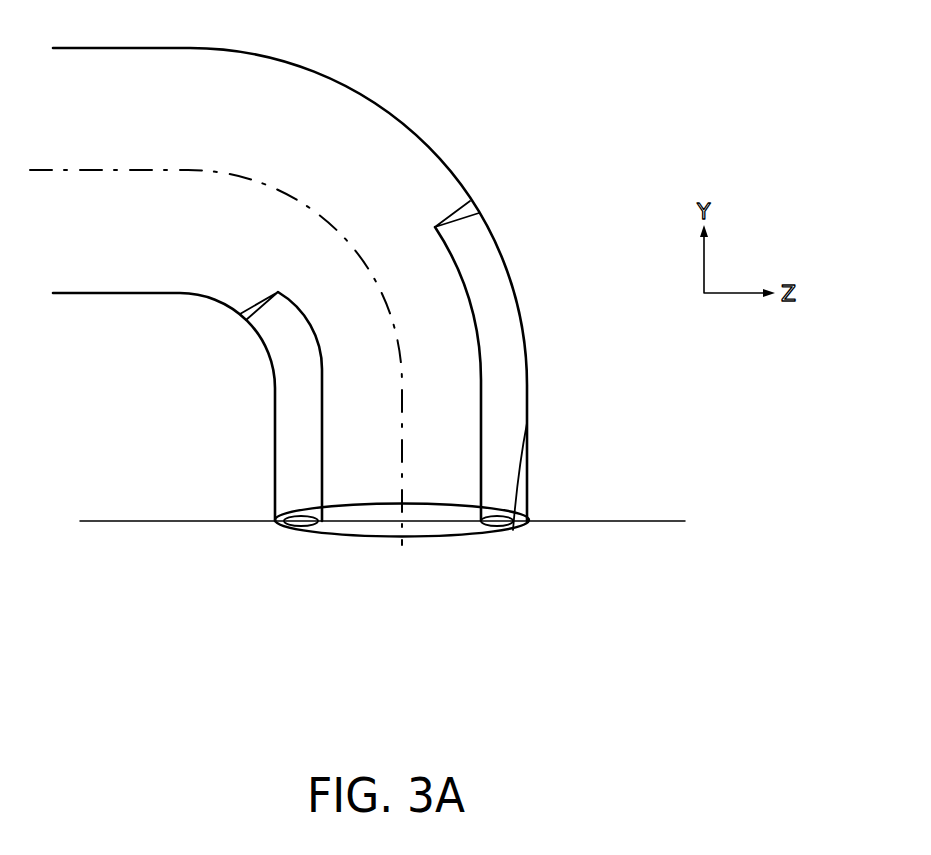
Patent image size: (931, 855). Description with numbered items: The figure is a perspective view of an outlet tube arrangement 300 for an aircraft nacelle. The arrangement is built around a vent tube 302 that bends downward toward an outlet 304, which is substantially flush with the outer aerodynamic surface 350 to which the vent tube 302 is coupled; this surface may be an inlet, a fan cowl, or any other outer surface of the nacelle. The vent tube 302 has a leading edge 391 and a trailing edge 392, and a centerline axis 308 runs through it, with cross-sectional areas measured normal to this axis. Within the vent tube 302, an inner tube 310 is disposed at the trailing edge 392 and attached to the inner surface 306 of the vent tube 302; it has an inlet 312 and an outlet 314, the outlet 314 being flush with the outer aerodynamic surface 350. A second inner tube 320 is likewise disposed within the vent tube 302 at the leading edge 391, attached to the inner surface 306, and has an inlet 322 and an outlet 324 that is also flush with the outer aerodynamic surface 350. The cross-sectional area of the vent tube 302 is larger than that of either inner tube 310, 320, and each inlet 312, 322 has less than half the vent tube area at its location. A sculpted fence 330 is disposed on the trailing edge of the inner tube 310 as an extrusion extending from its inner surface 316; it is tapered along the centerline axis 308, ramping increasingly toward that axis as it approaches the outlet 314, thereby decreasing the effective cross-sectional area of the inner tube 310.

The outlet tube arrangement 300 is at (373, 351).
The vent tube 302 is at (393, 110).
The outlet 304 is at (350, 537).
The inner surface 306 is at (418, 522).
The centerline axis 308 is at (322, 212).
The inner tube 310 is at (503, 351).
The inlet 312 is at (486, 224).
The outlet 314 is at (508, 528).
The inner surface 316 is at (490, 532).
The inner tube 320 is at (287, 400).
The inlet 322 is at (263, 302).
The outlet 324 is at (311, 535).
The sculpted fence 330 is at (513, 477).
The outer aerodynamic surface 350 is at (630, 523).
The leading edge 391 is at (271, 535).
The trailing edge 392 is at (540, 532).